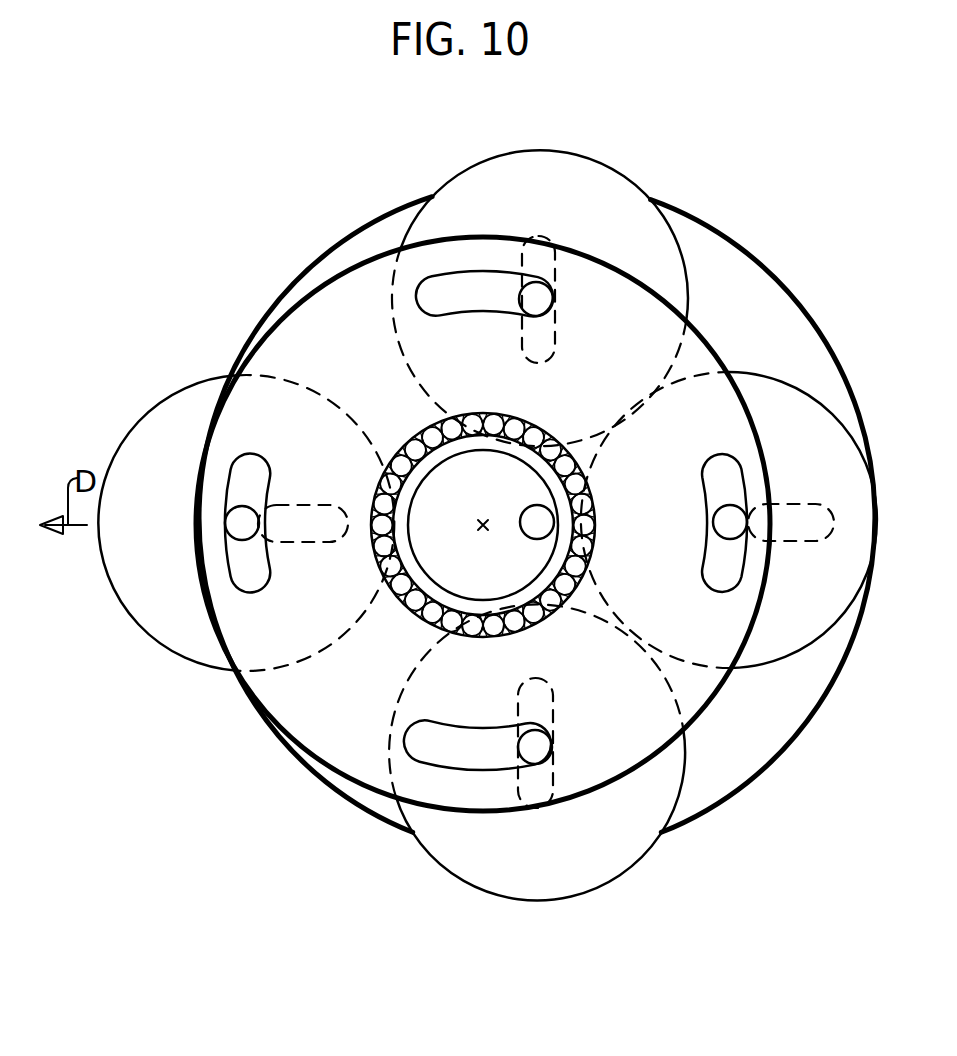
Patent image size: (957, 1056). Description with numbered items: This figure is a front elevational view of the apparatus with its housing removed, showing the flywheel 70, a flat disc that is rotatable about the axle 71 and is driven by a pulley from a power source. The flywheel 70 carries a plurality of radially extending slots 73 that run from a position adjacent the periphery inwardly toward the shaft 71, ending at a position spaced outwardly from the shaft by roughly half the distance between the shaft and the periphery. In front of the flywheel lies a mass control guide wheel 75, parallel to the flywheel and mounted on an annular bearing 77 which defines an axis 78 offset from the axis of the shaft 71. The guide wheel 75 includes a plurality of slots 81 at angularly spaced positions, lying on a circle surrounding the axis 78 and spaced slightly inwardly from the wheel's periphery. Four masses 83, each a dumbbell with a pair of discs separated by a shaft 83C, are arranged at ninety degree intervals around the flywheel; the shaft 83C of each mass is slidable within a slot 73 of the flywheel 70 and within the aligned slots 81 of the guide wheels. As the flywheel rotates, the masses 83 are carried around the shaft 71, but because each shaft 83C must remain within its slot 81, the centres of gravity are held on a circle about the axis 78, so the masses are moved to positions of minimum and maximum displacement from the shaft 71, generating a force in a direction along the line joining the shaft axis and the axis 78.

The flywheel 70 is at (717, 250).
The mass control guide wheel 75 is at (353, 780).
The annular bearing 77 is at (405, 444).
The axle 71 is at (533, 522).
The axis 78 is at (481, 527).
The slot 81 is at (468, 316).
The radially extending slot 73 is at (553, 337).
The mass 83 is at (543, 172).
The shaft 83C is at (233, 523).